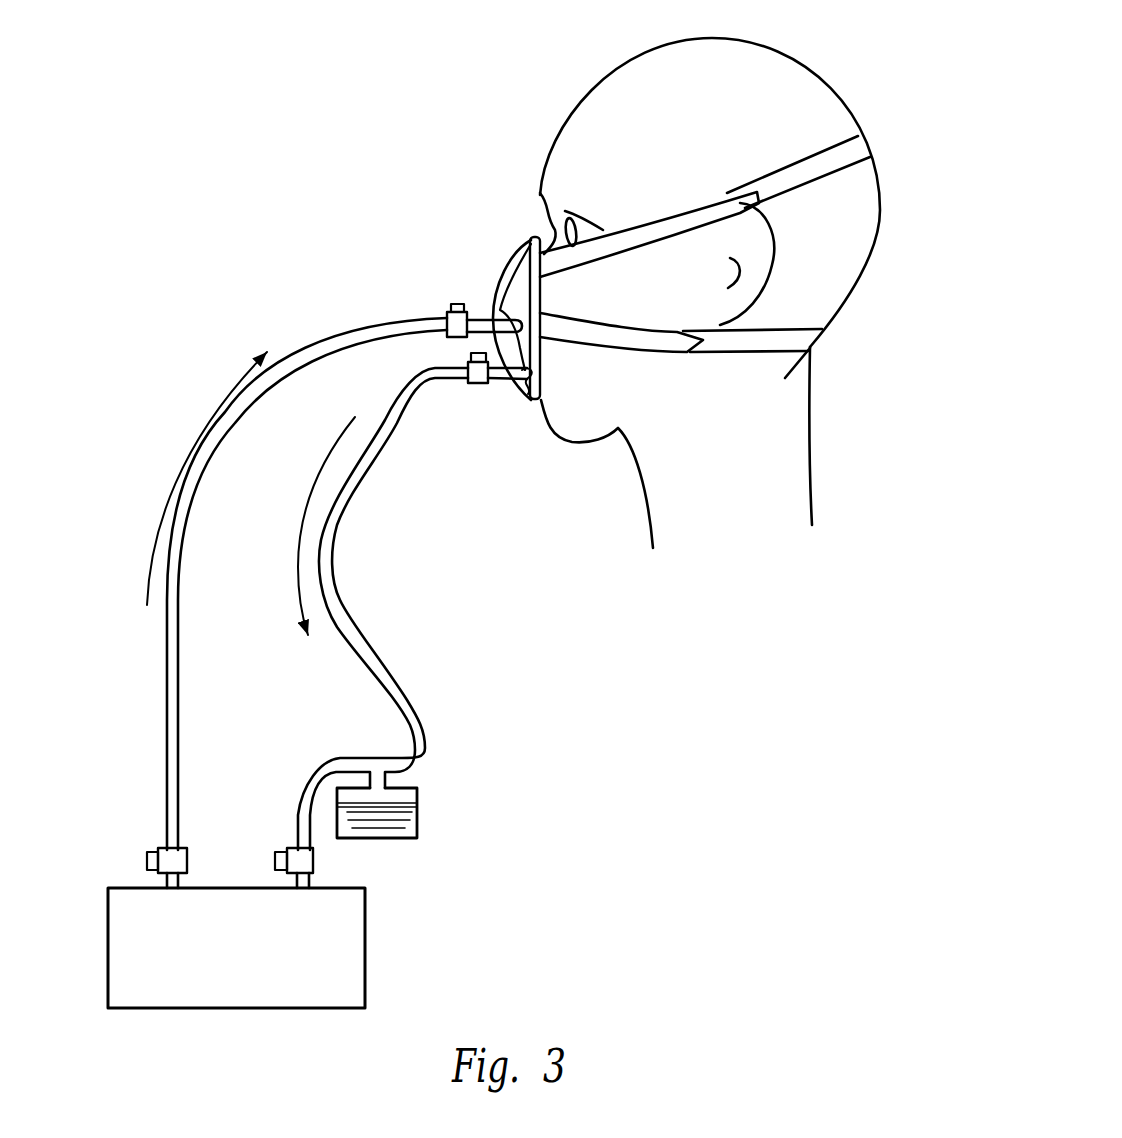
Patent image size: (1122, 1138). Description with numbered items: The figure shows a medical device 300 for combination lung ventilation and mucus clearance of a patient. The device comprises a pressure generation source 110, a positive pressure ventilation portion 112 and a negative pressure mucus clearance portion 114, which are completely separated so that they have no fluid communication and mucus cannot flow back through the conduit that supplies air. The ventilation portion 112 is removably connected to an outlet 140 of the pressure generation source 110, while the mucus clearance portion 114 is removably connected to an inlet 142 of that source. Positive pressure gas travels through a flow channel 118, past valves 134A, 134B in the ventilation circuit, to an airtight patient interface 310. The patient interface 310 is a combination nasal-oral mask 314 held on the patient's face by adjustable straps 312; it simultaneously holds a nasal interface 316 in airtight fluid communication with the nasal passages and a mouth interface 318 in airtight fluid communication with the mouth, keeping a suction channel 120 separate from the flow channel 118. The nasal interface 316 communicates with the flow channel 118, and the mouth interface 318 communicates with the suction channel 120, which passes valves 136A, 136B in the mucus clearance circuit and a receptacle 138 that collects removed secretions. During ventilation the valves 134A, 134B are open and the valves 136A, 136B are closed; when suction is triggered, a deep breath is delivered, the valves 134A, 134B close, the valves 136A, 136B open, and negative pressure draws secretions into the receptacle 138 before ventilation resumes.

The pressure generation source 110 is at (365, 943).
The positive pressure ventilation portion 112 is at (307, 584).
The negative pressure mucus clearance portion 114 is at (366, 609).
The flow channel 118 is at (198, 478).
The suction channel 120 is at (332, 555).
The valve 134A is at (187, 863).
The valve 134B is at (458, 322).
The valve 136A is at (313, 860).
The valve 136B is at (478, 383).
The receptacle 138 is at (417, 815).
The outlet 140 is at (165, 881).
The inlet 142 is at (293, 881).
The medical device 300 is at (253, 168).
The patient interface 310 is at (468, 309).
The adjustable straps 312 is at (818, 162).
The nasal-oral mask 314 is at (505, 272).
The nasal interface 316 is at (498, 308).
The mouth interface 318 is at (520, 391).